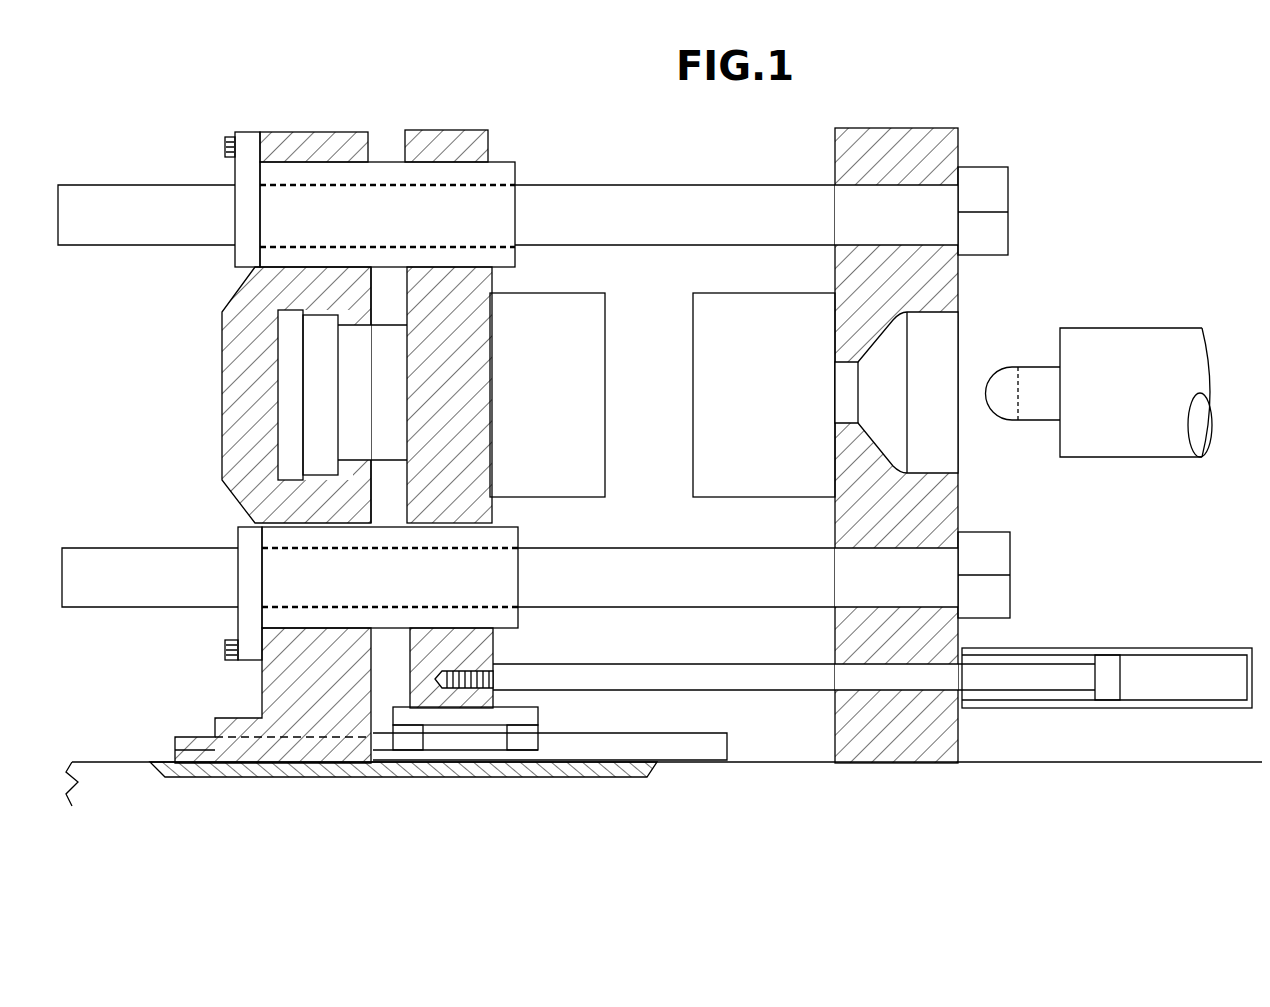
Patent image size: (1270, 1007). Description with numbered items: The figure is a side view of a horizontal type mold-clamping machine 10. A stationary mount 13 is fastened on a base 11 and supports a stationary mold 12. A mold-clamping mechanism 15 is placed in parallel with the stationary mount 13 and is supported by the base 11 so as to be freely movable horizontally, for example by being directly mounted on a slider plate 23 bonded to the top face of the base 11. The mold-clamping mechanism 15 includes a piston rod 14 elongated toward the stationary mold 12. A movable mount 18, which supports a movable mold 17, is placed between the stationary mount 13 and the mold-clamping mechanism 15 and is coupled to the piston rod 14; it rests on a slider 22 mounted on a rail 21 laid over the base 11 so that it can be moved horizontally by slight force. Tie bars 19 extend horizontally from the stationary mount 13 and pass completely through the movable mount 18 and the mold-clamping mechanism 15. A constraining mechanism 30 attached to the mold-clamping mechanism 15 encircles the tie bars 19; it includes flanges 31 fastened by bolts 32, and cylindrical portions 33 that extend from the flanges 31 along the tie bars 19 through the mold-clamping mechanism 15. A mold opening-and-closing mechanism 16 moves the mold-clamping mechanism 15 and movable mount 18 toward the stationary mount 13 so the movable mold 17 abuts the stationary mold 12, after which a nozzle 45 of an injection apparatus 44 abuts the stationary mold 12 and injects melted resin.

The mold-clamping machine 10 is at (1102, 152).
The base 11 is at (113, 760).
The stationary mold 12 is at (735, 412).
The stationary mount 13 is at (885, 160).
The piston rod 14 is at (355, 360).
The mold-clamping mechanism 15 is at (247, 405).
The mold opening-and-closing mechanism 16 is at (1135, 650).
The movable mold 17 is at (568, 333).
The movable mount 18 is at (445, 130).
The tie bar 19 is at (645, 200).
The rail 21 is at (693, 745).
The slider 22 is at (408, 740).
The slider plate 23 is at (260, 778).
The constraining mechanism 30 is at (505, 158).
The flange 31 is at (245, 137).
The bolt 32 is at (225, 147).
The cylindrical portion 33 is at (385, 165).
The injection apparatus 44 is at (1130, 342).
The nozzle 45 is at (1030, 385).